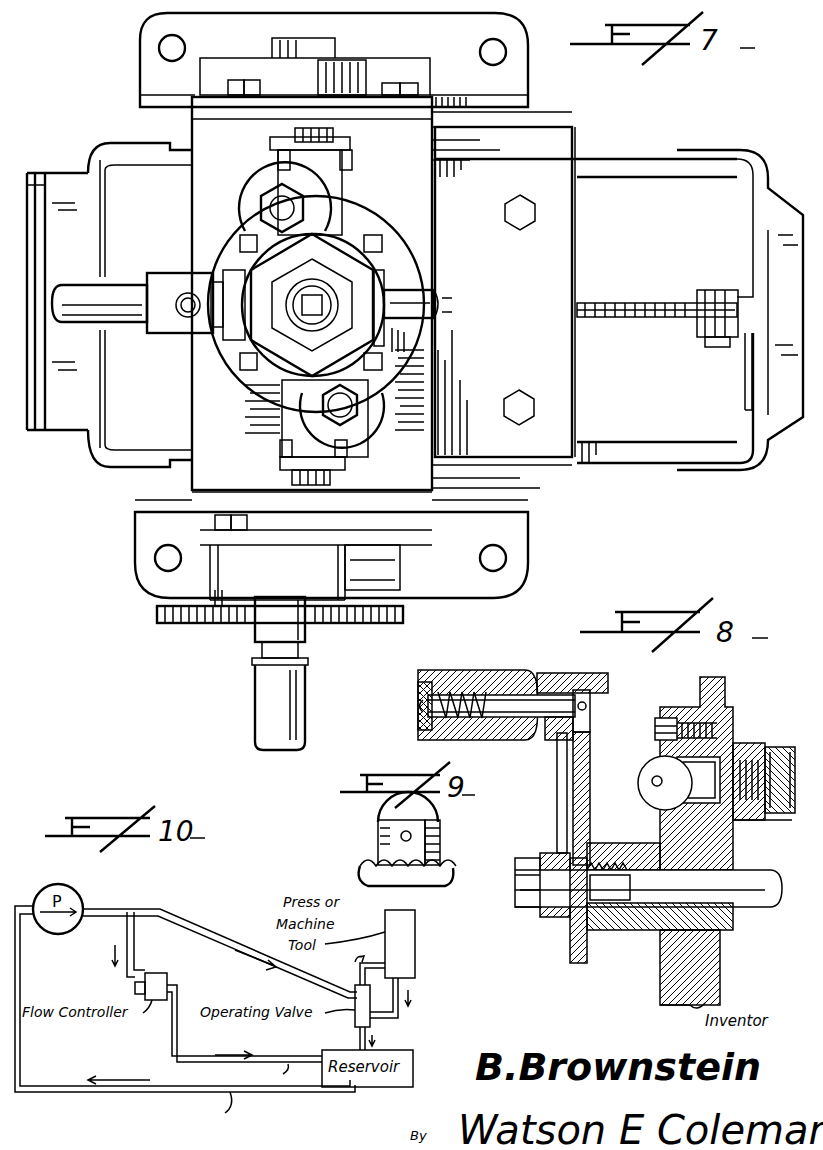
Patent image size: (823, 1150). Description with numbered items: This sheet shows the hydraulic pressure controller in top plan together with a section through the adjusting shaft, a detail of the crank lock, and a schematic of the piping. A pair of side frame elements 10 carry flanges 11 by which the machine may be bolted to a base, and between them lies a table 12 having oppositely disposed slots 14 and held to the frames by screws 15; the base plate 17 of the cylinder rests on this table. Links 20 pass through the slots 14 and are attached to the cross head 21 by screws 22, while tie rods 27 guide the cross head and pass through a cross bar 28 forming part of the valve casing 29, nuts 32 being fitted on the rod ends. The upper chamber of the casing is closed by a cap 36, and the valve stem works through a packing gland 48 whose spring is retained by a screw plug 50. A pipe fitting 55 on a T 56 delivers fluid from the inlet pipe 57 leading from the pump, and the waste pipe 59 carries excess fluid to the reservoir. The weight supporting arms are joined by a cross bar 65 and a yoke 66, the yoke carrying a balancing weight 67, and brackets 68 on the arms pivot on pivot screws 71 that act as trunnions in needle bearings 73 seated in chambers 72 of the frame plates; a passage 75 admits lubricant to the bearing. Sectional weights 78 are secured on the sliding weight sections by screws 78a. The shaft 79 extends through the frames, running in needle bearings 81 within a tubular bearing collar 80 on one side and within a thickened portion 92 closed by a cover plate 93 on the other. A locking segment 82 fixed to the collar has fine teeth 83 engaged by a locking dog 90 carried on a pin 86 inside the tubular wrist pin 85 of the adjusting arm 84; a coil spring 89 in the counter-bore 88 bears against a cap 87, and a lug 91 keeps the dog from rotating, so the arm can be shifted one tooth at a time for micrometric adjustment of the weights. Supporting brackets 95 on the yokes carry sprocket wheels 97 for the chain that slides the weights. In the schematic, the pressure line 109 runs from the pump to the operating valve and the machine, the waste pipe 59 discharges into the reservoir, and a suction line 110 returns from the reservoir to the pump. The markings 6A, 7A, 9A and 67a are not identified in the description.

In FIG. 7, the side frame elements 10 is at (426, 102).
In FIG. 8, the side frame elements 10 is at (712, 968).
In FIG. 7, the flanges 11 is at (142, 40).
In FIG. 7, the table 12 is at (433, 185).
In FIG. 7, the slots 14 is at (352, 153).
In FIG. 7, the screws 15 is at (236, 80).
In FIG. 7, the base plate 17 is at (440, 292).
In FIG. 7, the links 20 is at (278, 158).
In FIG. 8, the links 20 is at (782, 819).
In FIG. 7, the cross head 21 is at (343, 190).
In FIG. 7, the screws 22 is at (313, 128).
In FIG. 7, the tie rods 27 is at (270, 205).
In FIG. 7, the cross bar 28 is at (244, 228).
In FIG. 7, the valve casing 29 is at (372, 232).
In FIG. 7, the nuts 32 is at (293, 200).
In FIG. 7, the cap 36 is at (262, 350).
In FIG. 7, the packing gland 48 is at (320, 332).
In FIG. 7, the screw plug 50 is at (310, 292).
In FIG. 7, the pipe fitting 55 is at (225, 335).
In FIG. 7, the T 56 is at (180, 280).
In FIG. 7, the inlet pipe 57 is at (82, 276).
In FIG. 10, the inlet pipe 57 is at (134, 938).
In FIG. 7, the waste pipe 59 is at (452, 308).
In FIG. 10, the waste pipe 59 is at (178, 1000).
In FIG. 7, the cross bar 65 is at (770, 214).
In FIG. 7, the yoke 66 is at (78, 388).
In FIG. 7, the balancing weight 67 is at (42, 432).
In FIG. 7, the end plate flange 67a is at (40, 173).
In FIG. 8, the bracket 68 is at (757, 746).
In FIG. 8, the pivot screw 71 is at (780, 748).
In FIG. 8, the chamber 72 is at (705, 805).
In FIG. 8, the needle bearing 73 is at (665, 770).
In FIG. 8, the passage 75 is at (655, 782).
In FIG. 7, the sectional weights 78 is at (555, 268).
In FIG. 7, the screws 78a is at (517, 228).
In FIG. 8, the shaft 79 is at (735, 905).
In FIG. 7, the tubular bearing collar 80 is at (350, 578).
In FIG. 8, the tubular bearing collar 80 is at (630, 932).
In FIG. 8, the needle bearings 81 is at (612, 860).
In FIG. 7, the locking segment 82 is at (210, 625).
In FIG. 8, the locking segment 82 is at (590, 772).
In FIG. 7, the teeth 83 is at (157, 612).
In FIG. 9, the teeth 83 is at (450, 866).
In FIG. 8, the adjusting arm 84 is at (557, 806).
In FIG. 7, the wrist pin 85 is at (300, 651).
In FIG. 8, the wrist pin 85 is at (510, 690).
In FIG. 8, the pin 86 is at (505, 740).
In FIG. 7, the cap 87 is at (255, 692).
In FIG. 8, the cap 87 is at (420, 722).
In FIG. 8, the counter-bore 88 is at (470, 692).
In FIG. 8, the coil spring 89 is at (418, 688).
In FIG. 8, the locking dog 90 is at (590, 711).
In FIG. 9, the locking dog 90 is at (395, 852).
In FIG. 7, the lug 91 is at (270, 600).
In FIG. 8, the lug 91 is at (605, 684).
In FIG. 9, the lug 91 is at (430, 802).
In FIG. 7, the thickened portion 92 is at (205, 88).
In FIG. 7, the cover plate 93 is at (352, 60).
In FIG. 7, the supporting brackets 95 is at (102, 260).
In FIG. 7, the sprocket wheels 97 is at (690, 316).
In FIG. 10, the pressure line 109 is at (172, 912).
In FIG. 10, the suction line 110 is at (268, 1093).
In FIG. 7, the flange 6A is at (598, 165).
In FIG. 7, the base 7A is at (215, 560).
In FIG. 8, the base 7A is at (662, 985).
In FIG. 7, the plate 9A is at (283, 42).